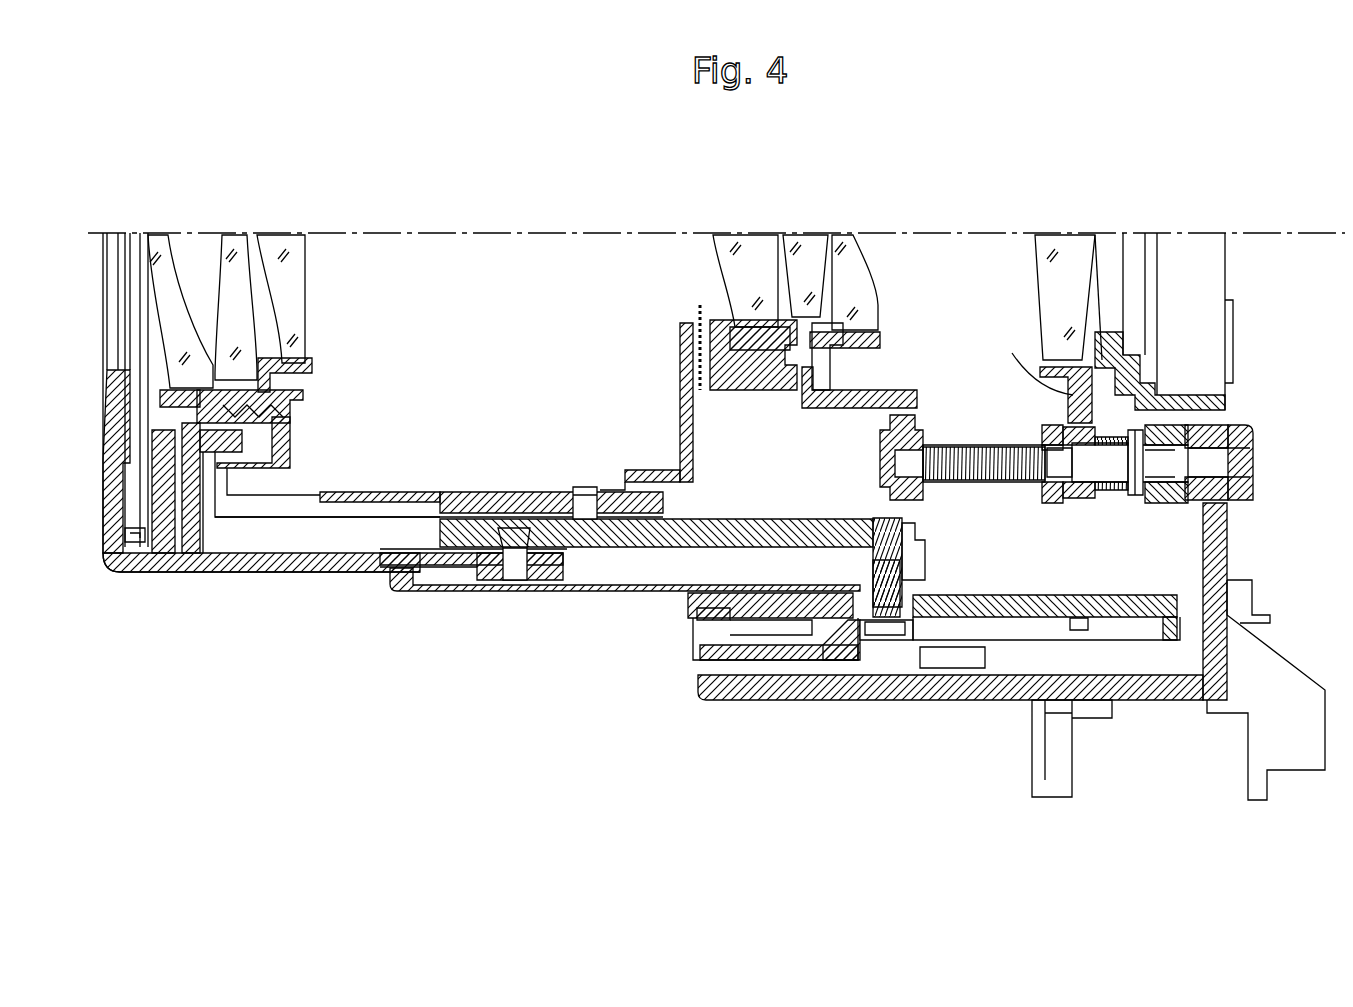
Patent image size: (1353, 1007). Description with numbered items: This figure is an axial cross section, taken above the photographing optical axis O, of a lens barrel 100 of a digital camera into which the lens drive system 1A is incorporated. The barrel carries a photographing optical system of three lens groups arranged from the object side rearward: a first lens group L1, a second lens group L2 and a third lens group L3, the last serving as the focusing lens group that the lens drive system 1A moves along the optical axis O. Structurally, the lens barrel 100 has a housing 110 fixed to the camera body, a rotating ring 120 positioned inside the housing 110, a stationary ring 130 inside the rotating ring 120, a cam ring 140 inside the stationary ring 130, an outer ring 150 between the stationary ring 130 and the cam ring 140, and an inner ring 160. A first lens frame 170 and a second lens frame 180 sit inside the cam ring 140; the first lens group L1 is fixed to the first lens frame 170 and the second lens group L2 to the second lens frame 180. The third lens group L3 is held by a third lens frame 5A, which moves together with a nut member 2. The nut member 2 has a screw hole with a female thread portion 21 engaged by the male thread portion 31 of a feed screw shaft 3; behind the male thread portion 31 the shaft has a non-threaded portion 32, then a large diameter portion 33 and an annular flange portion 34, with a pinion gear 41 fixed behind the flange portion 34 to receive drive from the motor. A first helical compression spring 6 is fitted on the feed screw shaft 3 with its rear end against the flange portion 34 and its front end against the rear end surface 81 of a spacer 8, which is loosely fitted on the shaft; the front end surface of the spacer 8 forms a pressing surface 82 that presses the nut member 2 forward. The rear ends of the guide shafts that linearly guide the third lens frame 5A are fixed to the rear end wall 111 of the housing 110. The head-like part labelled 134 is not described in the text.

The lens barrel 100 is at (603, 220).
The photographing optical axis O is at (483, 232).
The lens drive system 1A is at (973, 282).
The first lens group L1 is at (158, 245).
The second lens group L2 is at (842, 245).
The third lens group L3 is at (1070, 250).
The first lens frame 170 is at (300, 400).
The inner ring 160 is at (258, 572).
The outer ring 150 is at (578, 581).
The cam ring 140 is at (658, 549).
The second lens frame 180 is at (890, 392).
The third lens frame 5A is at (1063, 395).
The large diameter portion 33 is at (1155, 398).
The adjusting screw head 134 is at (880, 428).
The feed screw shaft 3 is at (938, 440).
The male thread portion 31 is at (953, 450).
The pressing surface 82 is at (1055, 430).
The female thread portion 21 is at (1042, 436).
The nut member 2 is at (1042, 492).
The non-threaded portion 32 is at (1052, 465).
The spacer 8 is at (1072, 498).
The rear end surface 81 is at (1100, 493).
The first helical compression spring 6 is at (1118, 495).
The annular flange portion 34 is at (1135, 497).
The pinion gear 41 is at (1247, 412).
The stationary ring 130 is at (772, 602).
The rotating ring 120 is at (842, 622).
The housing 110 is at (935, 702).
The rear end wall 111 is at (1215, 573).